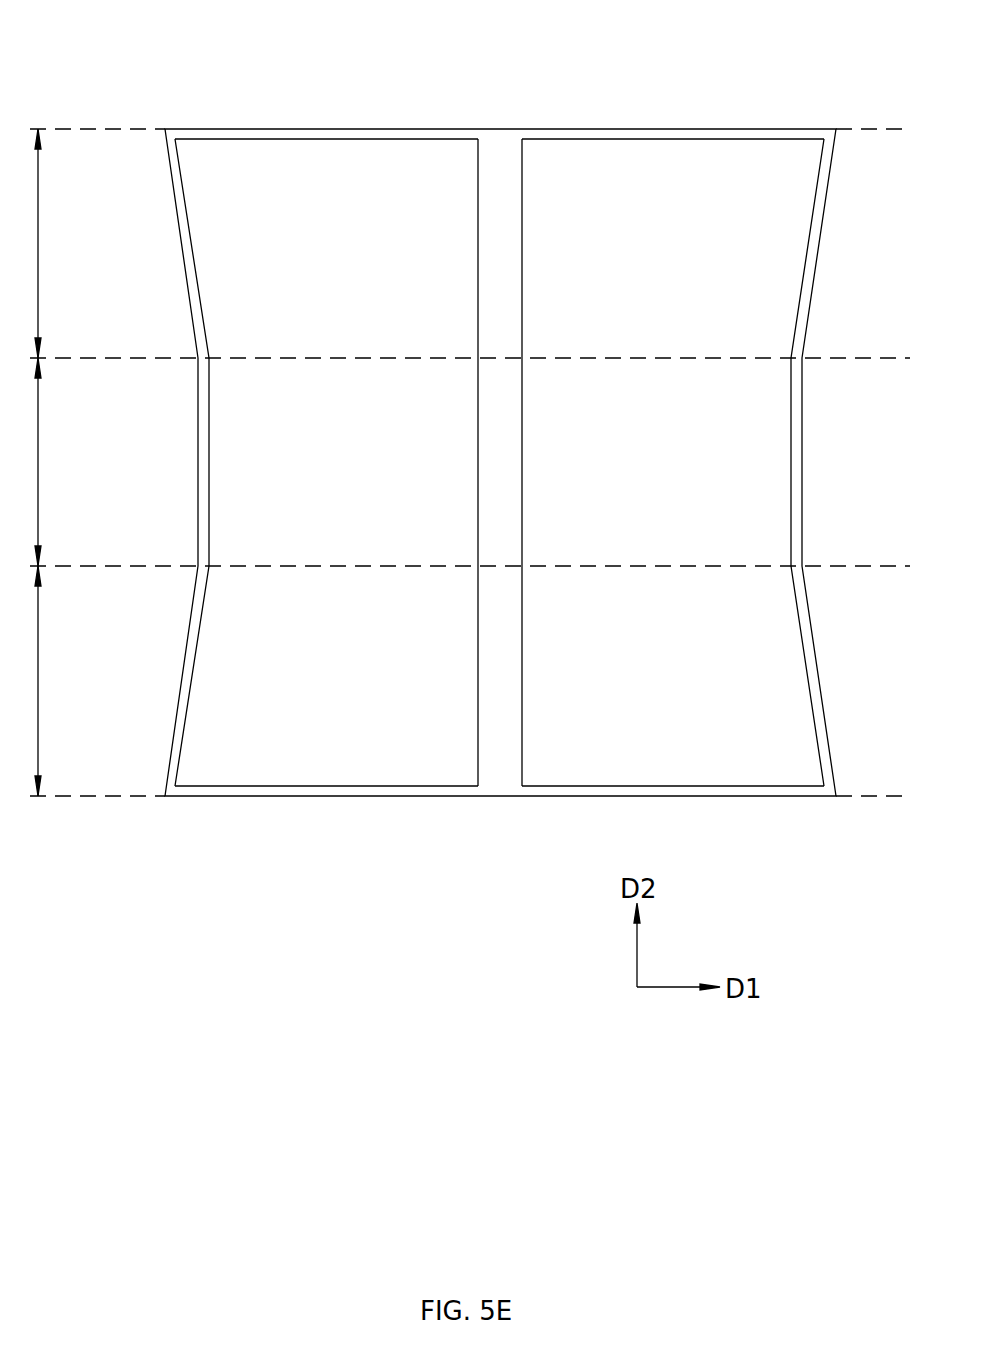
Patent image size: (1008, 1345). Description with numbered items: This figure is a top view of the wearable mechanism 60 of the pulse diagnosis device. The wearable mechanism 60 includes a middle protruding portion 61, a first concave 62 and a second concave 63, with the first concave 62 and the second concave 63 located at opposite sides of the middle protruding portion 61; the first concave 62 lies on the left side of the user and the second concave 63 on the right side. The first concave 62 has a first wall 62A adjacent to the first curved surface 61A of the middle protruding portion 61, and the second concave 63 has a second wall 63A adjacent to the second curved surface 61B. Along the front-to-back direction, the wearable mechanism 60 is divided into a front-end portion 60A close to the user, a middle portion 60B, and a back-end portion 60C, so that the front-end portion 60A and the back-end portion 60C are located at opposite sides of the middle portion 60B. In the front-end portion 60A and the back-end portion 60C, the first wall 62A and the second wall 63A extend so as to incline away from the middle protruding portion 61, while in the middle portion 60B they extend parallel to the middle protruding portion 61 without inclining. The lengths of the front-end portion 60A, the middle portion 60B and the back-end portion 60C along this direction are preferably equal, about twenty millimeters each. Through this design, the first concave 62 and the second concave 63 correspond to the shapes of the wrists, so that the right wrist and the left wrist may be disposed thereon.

The wearable mechanism 60 is at (138, 27).
The front-end portion 60A is at (37, 681).
The middle portion 60B is at (37, 462).
The back-end portion 60C is at (37, 243).
The middle protruding portion 61 is at (502, 428).
The first curved surface 61A is at (470, 177).
The second curved surface 61B is at (530, 177).
The first concave 62 is at (296, 462).
The first wall 62A is at (198, 439).
The second concave 63 is at (703, 462).
The second wall 63A is at (802, 439).